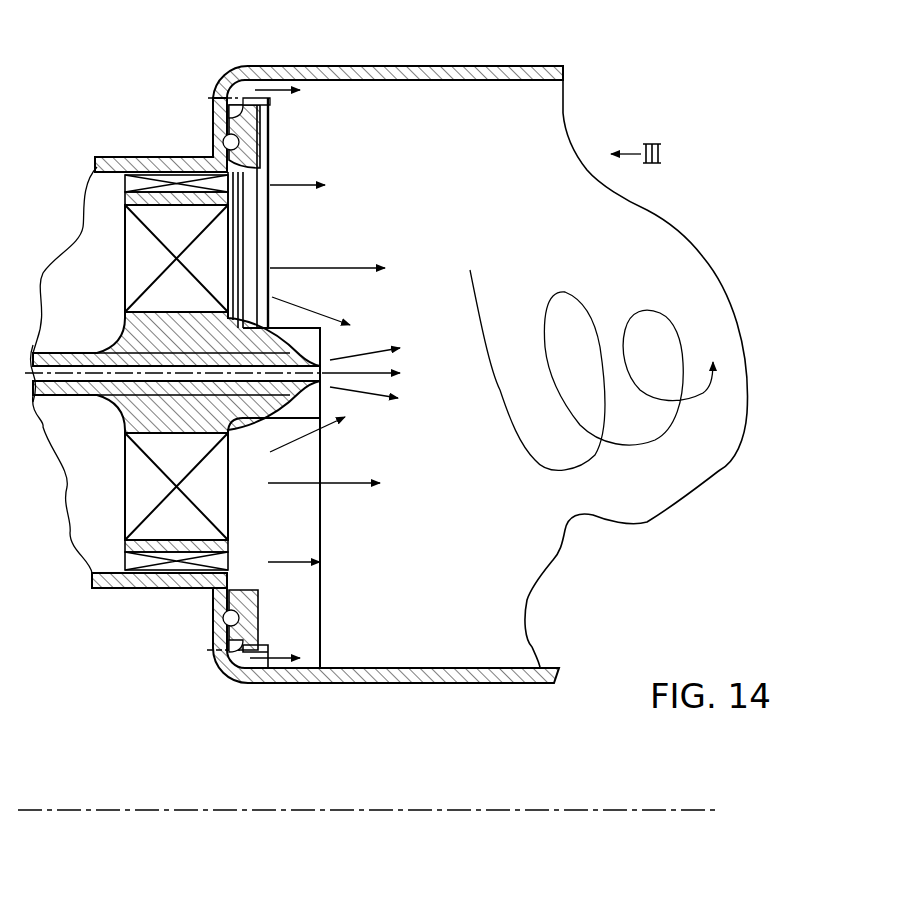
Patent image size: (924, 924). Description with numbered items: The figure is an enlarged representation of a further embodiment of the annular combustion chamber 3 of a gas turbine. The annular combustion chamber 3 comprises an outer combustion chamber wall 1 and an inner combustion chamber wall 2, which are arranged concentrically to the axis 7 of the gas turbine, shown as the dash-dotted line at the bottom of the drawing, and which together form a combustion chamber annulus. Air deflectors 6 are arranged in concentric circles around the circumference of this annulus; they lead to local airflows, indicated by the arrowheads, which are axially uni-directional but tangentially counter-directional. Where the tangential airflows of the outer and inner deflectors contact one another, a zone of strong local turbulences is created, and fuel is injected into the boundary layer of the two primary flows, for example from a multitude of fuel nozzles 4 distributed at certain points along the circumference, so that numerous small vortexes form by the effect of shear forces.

The outer combustion chamber wall 1 is at (528, 66).
The inner combustion chamber wall 2 is at (521, 683).
The annular combustion chamber 3 is at (697, 278).
The fuel nozzles 4 is at (300, 363).
The air deflectors 6 is at (130, 252).
The axis 7 is at (566, 809).